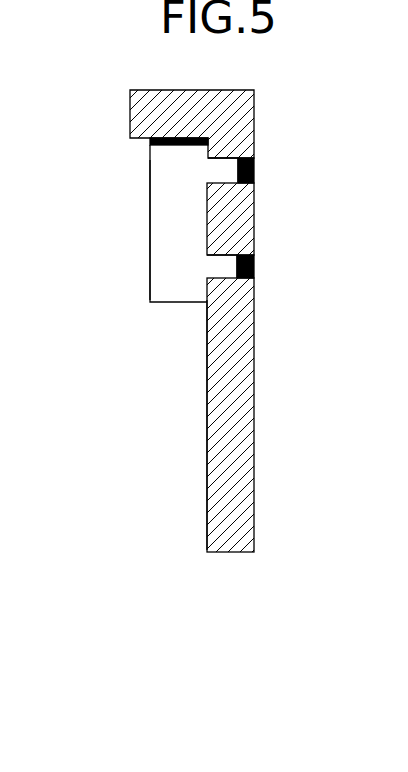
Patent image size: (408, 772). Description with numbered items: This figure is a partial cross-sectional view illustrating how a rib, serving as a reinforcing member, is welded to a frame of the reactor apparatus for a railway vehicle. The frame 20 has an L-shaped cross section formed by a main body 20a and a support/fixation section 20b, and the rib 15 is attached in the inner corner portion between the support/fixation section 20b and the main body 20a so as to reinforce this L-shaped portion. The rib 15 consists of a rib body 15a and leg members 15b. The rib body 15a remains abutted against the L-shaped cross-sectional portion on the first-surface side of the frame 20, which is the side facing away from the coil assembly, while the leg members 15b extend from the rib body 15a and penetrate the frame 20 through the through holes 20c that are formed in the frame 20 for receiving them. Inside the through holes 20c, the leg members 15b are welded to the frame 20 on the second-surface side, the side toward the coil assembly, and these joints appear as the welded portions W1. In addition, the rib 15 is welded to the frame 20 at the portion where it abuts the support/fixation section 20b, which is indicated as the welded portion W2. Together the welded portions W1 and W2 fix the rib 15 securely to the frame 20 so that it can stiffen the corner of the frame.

The rib 15 is at (141, 230).
The rib body 15a is at (160, 262).
The leg members 15b is at (227, 168).
The frame 20 is at (197, 437).
The main body 20a is at (207, 506).
The support/fixation section 20b is at (130, 111).
The through holes 20c is at (215, 181).
The welded portions W1 is at (245, 172).
The welded portion W2 is at (170, 147).